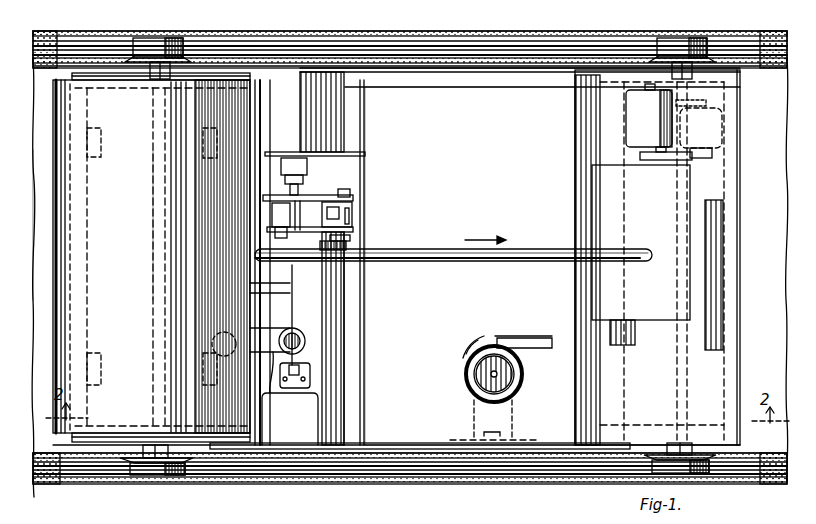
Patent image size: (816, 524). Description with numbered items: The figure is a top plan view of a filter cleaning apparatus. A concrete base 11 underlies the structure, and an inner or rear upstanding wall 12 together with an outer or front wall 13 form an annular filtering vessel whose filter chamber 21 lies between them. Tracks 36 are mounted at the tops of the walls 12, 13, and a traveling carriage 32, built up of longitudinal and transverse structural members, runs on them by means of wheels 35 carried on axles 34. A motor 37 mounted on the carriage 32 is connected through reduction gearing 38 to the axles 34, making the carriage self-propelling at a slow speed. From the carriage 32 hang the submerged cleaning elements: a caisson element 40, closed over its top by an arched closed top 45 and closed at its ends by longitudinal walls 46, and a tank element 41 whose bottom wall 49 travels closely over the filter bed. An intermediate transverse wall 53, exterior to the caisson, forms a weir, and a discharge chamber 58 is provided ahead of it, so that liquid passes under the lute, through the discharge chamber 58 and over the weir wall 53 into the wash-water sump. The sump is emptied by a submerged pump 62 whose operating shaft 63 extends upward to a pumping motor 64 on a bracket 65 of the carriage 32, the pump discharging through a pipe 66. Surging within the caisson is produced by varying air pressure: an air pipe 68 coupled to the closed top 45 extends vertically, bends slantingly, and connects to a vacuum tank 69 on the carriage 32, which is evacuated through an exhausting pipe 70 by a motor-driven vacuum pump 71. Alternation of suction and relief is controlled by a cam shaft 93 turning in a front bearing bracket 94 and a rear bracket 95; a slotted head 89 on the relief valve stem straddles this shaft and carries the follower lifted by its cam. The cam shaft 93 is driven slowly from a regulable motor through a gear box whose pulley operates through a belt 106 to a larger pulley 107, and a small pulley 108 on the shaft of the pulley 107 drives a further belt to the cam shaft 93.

The concrete base 11 is at (35, 222).
The inner upstanding wall 12 is at (36, 55).
The outer wall 13 is at (42, 480).
The filter chamber 21 is at (35, 280).
The traveling carriage 32 is at (475, 82).
The axles 34 is at (152, 208).
The wheels 35 is at (155, 45).
The tracks 36 is at (389, 45).
The motor 37 is at (634, 113).
The reduction gearing 38 is at (712, 127).
The caisson element 40 is at (340, 289).
The tank element 41 is at (513, 100).
The closed top 45 is at (340, 409).
The longitudinal walls 46 is at (250, 76).
The bottom wall 49 is at (476, 179).
The intermediate transverse wall 53 is at (363, 385).
The discharge chamber 58 is at (352, 326).
The pump 62 is at (466, 380).
The operating shaft 63 is at (497, 374).
The pumping motor 64 is at (468, 350).
The bracket 65 is at (512, 410).
The discharge pipe 66 is at (528, 338).
The air pipe 68 is at (265, 388).
The vacuum tank 69 is at (132, 289).
The exhausting pipe 70 is at (400, 250).
The vacuum pump 71 is at (659, 320).
The head 89 is at (292, 158).
The cam shaft 93 is at (291, 310).
The front bearing bracket 94 is at (305, 368).
The rear bracket 95 is at (303, 189).
The belt 106 is at (326, 232).
The larger pulley 107 is at (352, 222).
The small pulley 108 is at (350, 192).